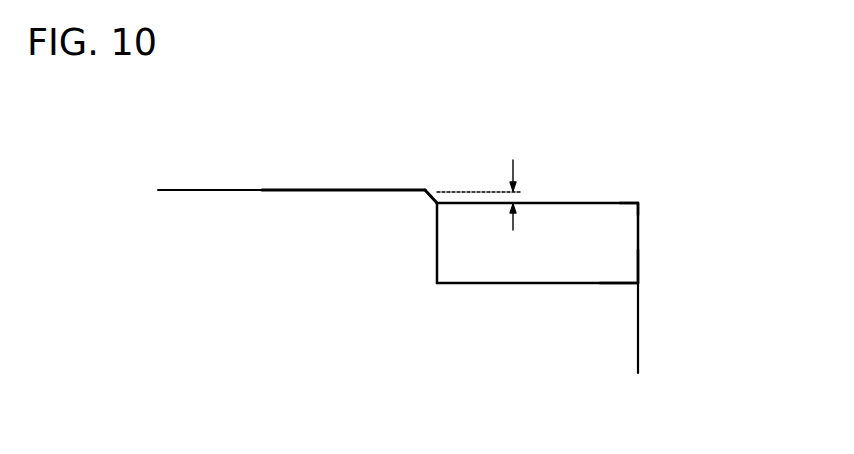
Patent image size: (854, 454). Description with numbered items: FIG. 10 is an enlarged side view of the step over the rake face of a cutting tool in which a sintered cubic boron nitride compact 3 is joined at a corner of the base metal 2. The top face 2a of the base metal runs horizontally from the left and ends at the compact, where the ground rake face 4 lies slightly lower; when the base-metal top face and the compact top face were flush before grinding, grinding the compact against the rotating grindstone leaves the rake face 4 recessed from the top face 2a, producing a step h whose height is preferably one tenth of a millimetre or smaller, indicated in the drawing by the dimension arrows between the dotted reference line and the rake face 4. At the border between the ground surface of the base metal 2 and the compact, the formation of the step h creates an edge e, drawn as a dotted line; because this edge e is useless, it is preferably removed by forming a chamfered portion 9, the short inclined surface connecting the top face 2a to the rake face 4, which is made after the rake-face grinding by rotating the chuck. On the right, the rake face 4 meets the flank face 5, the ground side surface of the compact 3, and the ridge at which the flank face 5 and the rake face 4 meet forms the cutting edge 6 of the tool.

The base metal 2 is at (212, 330).
The top face of the base metal 2a is at (263, 189).
The sintered cubic boron nitride compact 3 is at (641, 266).
The rake face 4 is at (600, 202).
The flank face 5 is at (641, 224).
The cutting edge 6 is at (639, 200).
The chamfered portion 9 is at (432, 191).
The edge e is at (437, 193).
The step h is at (514, 196).